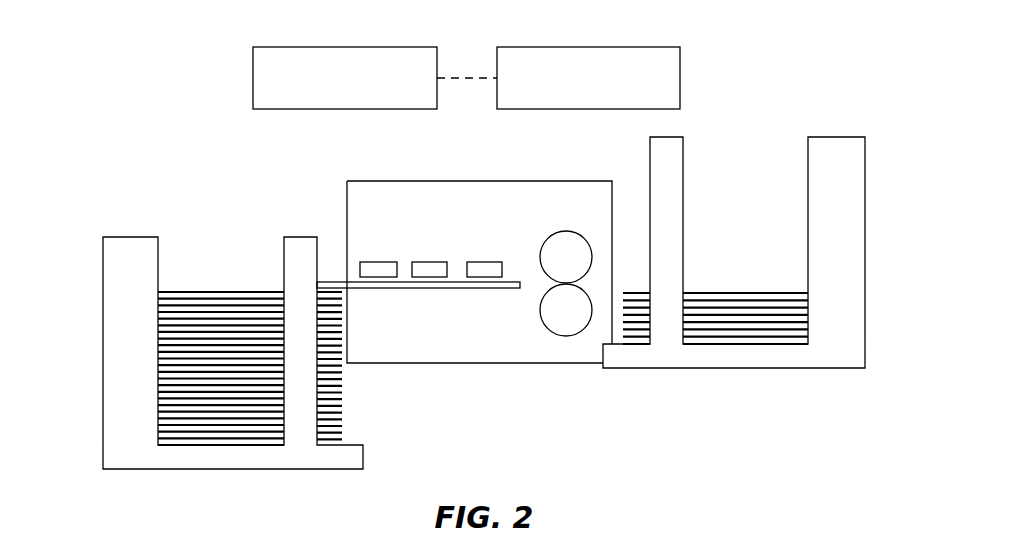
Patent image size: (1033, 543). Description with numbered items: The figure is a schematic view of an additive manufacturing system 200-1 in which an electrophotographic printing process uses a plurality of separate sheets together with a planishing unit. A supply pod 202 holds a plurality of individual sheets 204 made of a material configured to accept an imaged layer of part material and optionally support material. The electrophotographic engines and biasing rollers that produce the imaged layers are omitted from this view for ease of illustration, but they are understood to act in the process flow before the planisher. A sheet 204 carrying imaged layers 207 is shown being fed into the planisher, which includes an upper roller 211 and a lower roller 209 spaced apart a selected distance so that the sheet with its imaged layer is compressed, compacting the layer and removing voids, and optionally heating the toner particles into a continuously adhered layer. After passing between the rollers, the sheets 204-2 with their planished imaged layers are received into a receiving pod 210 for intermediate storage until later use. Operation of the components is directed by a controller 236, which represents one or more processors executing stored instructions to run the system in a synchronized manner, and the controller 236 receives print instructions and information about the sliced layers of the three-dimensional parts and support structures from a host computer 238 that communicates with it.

The additive manufacturing system 200-1 is at (198, 122).
The supply pod 202 is at (115, 363).
The individual sheets 204 is at (235, 300).
The sheets with planished imaged layers 204-2 is at (780, 303).
The imaged layer of part material 207 is at (374, 262).
The lower roller 209 is at (566, 336).
The receiving pod 210 is at (852, 214).
The upper roller 211 is at (566, 231).
The controller 236 is at (307, 47).
The host computer 238 is at (628, 47).